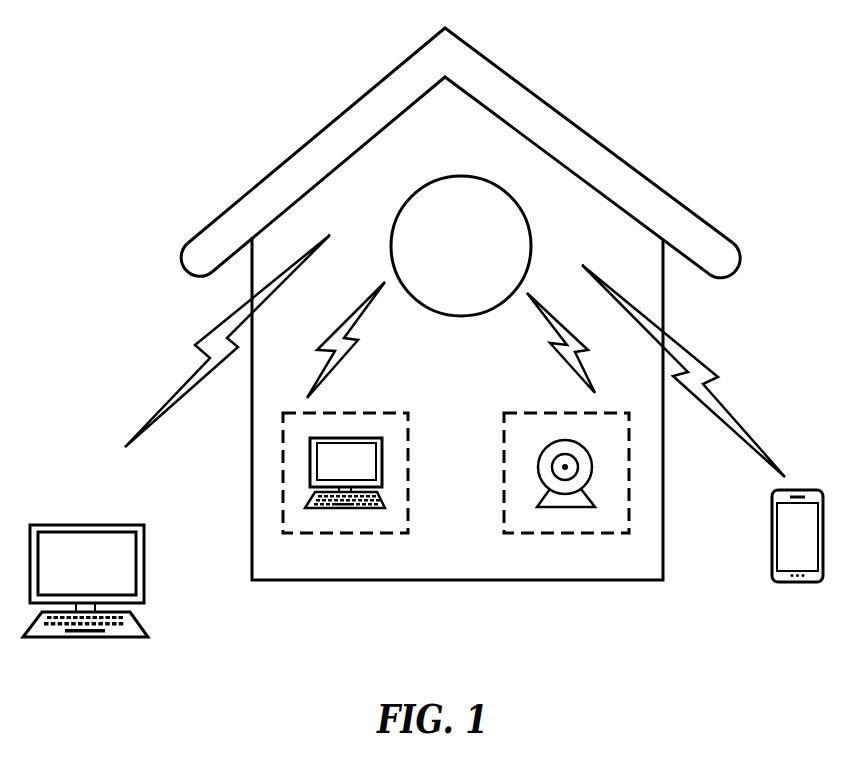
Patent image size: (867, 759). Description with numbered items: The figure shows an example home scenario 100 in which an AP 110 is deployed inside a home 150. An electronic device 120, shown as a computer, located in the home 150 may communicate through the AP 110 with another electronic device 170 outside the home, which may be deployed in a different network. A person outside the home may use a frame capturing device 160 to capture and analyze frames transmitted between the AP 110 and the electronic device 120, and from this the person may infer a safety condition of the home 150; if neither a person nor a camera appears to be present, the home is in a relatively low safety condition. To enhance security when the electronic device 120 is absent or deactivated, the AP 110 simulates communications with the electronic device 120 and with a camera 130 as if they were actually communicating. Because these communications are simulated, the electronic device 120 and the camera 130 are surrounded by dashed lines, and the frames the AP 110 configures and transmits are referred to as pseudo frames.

The scenario 100 is at (197, 84).
The AP 110 is at (458, 177).
The electronic device 120 is at (365, 412).
The camera 130 is at (518, 412).
The home 150 is at (620, 157).
The frame capturing device 160 is at (769, 550).
The electronic device 170 is at (70, 504).